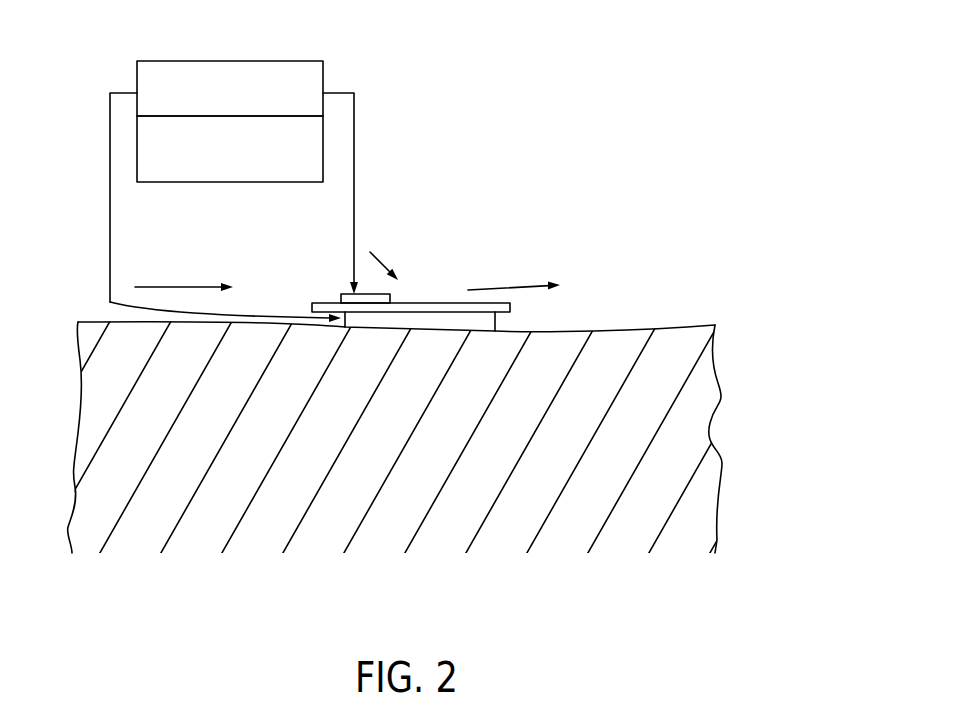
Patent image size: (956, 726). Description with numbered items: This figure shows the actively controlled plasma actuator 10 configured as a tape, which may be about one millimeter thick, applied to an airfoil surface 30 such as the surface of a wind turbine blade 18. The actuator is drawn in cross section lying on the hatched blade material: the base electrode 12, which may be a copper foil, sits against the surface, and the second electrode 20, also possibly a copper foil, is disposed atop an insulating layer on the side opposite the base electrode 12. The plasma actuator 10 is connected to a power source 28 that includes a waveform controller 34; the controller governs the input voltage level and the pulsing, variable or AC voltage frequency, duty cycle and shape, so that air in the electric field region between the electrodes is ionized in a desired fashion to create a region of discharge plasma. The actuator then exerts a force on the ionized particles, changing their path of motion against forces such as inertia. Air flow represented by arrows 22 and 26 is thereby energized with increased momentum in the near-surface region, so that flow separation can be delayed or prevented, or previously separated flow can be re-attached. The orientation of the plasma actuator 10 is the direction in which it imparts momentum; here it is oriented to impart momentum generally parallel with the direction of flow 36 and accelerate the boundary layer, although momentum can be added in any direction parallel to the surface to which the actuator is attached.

The plasma actuator 10 is at (432, 300).
The base electrode 12 is at (495, 324).
The wind turbine blade 18 is at (321, 302).
The second electrode 20 is at (347, 291).
The air flow 22 is at (385, 266).
The air flow 26 is at (513, 288).
The power source 28 is at (137, 73).
The airfoil surface 30 is at (688, 323).
The waveform controller 34 is at (137, 152).
The direction of flow 36 is at (186, 287).